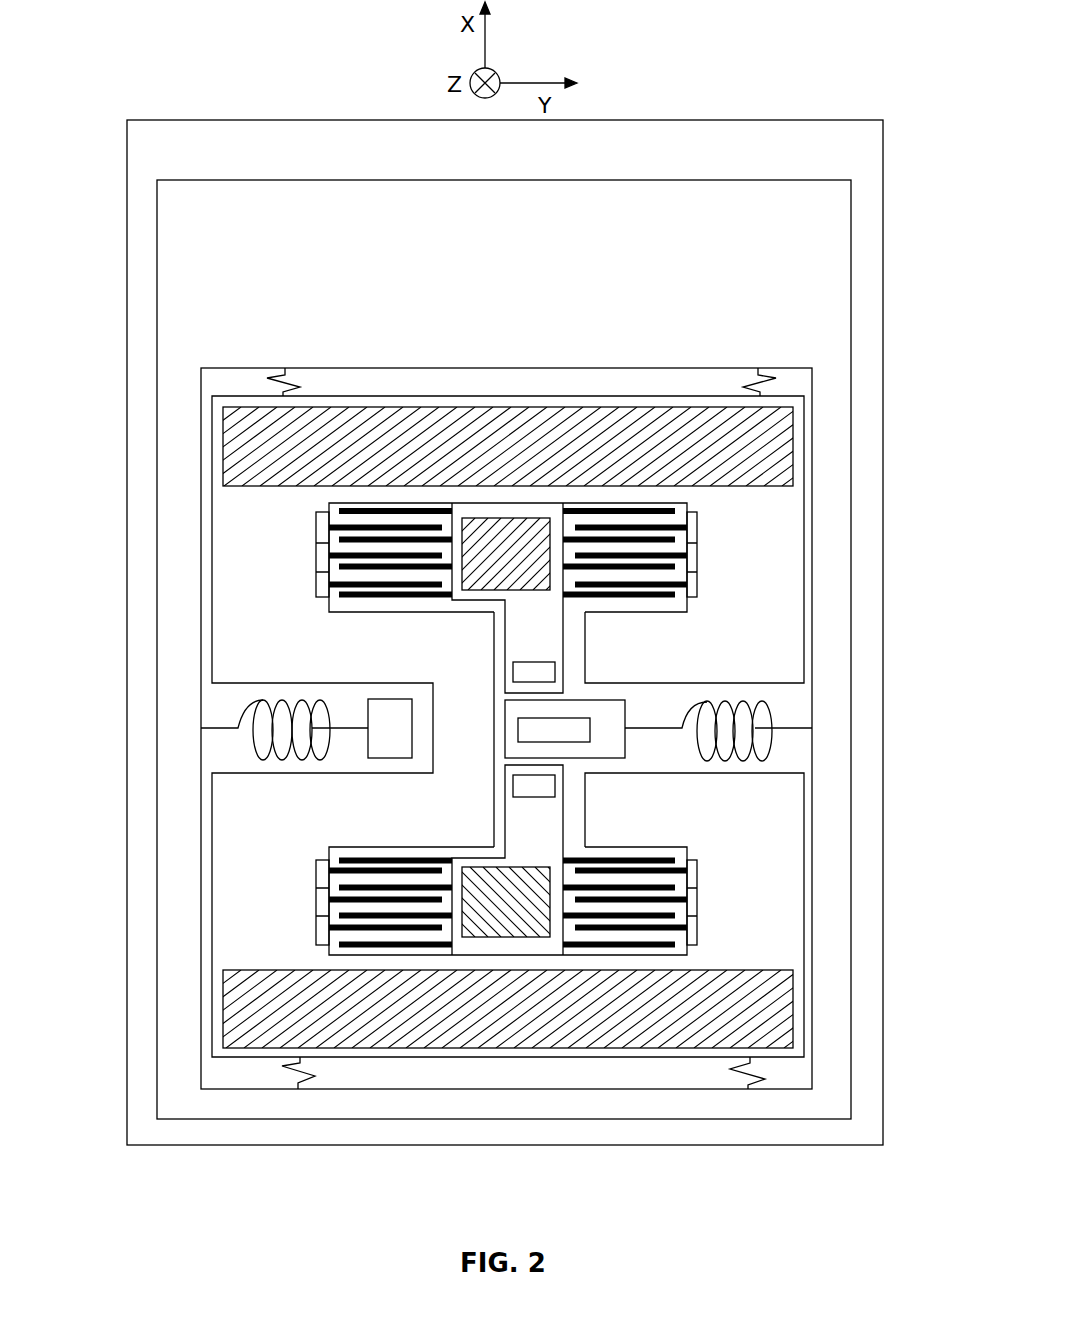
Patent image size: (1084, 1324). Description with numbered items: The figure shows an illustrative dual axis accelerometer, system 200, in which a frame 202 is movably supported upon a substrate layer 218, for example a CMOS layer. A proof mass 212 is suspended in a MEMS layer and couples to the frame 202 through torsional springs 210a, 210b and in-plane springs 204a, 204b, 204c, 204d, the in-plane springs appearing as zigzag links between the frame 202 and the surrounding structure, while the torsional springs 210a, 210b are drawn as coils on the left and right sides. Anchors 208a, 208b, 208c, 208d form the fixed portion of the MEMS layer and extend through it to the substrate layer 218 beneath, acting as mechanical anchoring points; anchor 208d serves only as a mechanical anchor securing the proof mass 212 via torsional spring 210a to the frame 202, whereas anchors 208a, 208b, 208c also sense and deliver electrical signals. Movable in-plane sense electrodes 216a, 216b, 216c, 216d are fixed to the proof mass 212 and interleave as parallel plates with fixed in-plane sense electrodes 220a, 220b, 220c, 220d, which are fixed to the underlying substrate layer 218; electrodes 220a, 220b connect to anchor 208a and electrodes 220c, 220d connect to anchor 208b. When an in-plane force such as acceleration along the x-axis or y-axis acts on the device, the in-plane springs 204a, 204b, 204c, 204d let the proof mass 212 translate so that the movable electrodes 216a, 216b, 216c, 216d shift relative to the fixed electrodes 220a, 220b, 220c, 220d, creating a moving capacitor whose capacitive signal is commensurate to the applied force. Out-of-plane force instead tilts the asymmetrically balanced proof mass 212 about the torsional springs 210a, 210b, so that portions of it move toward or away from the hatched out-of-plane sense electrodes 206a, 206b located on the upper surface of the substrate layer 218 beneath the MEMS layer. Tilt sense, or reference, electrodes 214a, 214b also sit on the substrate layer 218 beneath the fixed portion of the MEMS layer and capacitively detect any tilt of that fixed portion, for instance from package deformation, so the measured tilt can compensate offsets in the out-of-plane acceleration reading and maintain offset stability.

The system 200 is at (140, 102).
The frame 202 is at (232, 181).
The in-plane spring 204a is at (268, 378).
The in-plane spring 204b is at (760, 376).
The in-plane spring 204c is at (300, 1075).
The in-plane spring 204d is at (723, 1068).
The out-of-plane sense electrode 206a is at (607, 416).
The out-of-plane sense electrode 206b is at (480, 1042).
The anchor 208a is at (530, 661).
The anchor 208b is at (513, 786).
The anchor 208c is at (627, 713).
The anchor 208d is at (367, 708).
The torsional spring 210a is at (220, 730).
The torsional spring 210b is at (797, 730).
The proof mass 212 is at (275, 818).
The tilt sense electrode 214a is at (500, 530).
The tilt sense electrode 214b is at (482, 930).
The movable in-plane sense electrode 216a is at (329, 586).
The movable in-plane sense electrode 216b is at (687, 586).
The movable in-plane sense electrode 216c is at (329, 928).
The movable in-plane sense electrode 216d is at (687, 928).
The substrate layer 218 is at (841, 166).
The fixed in-plane sense electrode 220a is at (339, 513).
The fixed in-plane sense electrode 220b is at (675, 513).
The fixed in-plane sense electrode 220c is at (339, 860).
The fixed in-plane sense electrode 220d is at (675, 860).